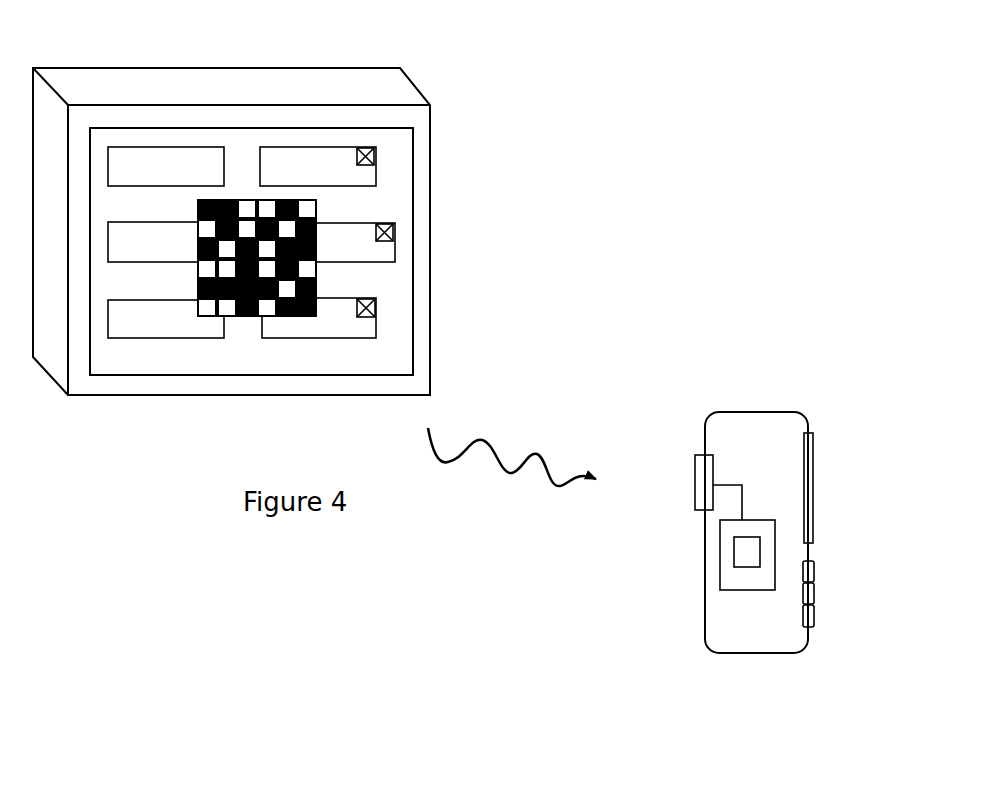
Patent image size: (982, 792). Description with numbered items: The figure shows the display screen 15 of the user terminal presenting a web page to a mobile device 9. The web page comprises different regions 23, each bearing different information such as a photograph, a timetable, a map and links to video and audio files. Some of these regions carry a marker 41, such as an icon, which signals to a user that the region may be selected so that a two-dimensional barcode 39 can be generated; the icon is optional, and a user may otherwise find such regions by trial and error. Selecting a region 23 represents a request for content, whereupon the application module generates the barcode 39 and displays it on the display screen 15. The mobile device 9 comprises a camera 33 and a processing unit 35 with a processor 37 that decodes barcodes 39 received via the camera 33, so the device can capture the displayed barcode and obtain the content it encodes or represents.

The display screen 15 is at (434, 151).
The region of the web page 23 is at (400, 245).
The marker 41 is at (380, 306).
The two-dimensional barcode 39 is at (222, 314).
The mobile device 9 is at (734, 627).
The camera 33 is at (699, 474).
The processing unit 35 is at (717, 578).
The processor 37 is at (750, 558).